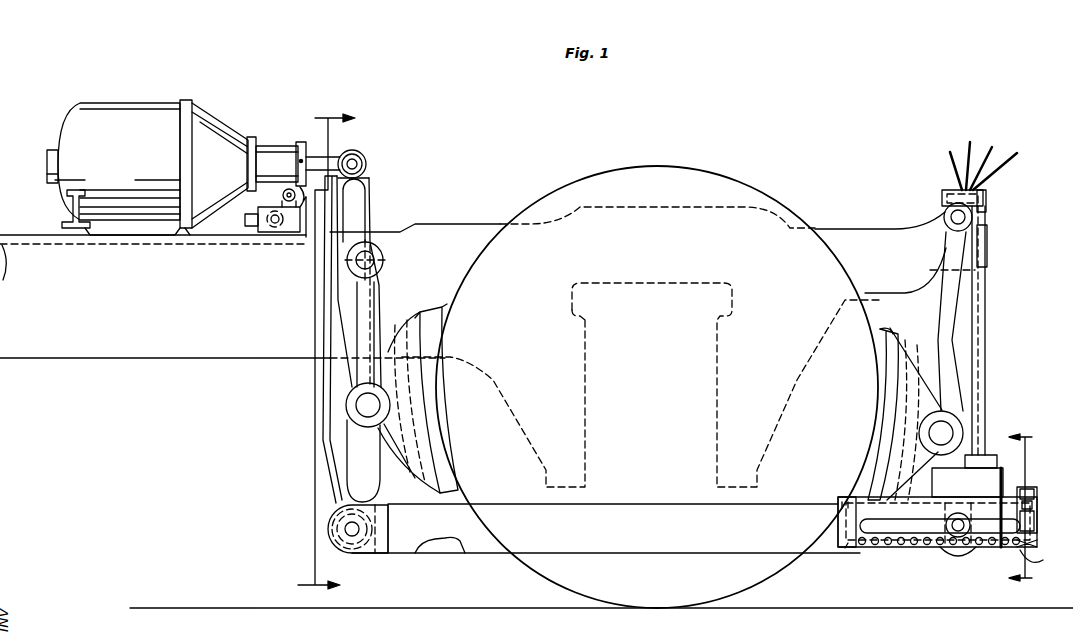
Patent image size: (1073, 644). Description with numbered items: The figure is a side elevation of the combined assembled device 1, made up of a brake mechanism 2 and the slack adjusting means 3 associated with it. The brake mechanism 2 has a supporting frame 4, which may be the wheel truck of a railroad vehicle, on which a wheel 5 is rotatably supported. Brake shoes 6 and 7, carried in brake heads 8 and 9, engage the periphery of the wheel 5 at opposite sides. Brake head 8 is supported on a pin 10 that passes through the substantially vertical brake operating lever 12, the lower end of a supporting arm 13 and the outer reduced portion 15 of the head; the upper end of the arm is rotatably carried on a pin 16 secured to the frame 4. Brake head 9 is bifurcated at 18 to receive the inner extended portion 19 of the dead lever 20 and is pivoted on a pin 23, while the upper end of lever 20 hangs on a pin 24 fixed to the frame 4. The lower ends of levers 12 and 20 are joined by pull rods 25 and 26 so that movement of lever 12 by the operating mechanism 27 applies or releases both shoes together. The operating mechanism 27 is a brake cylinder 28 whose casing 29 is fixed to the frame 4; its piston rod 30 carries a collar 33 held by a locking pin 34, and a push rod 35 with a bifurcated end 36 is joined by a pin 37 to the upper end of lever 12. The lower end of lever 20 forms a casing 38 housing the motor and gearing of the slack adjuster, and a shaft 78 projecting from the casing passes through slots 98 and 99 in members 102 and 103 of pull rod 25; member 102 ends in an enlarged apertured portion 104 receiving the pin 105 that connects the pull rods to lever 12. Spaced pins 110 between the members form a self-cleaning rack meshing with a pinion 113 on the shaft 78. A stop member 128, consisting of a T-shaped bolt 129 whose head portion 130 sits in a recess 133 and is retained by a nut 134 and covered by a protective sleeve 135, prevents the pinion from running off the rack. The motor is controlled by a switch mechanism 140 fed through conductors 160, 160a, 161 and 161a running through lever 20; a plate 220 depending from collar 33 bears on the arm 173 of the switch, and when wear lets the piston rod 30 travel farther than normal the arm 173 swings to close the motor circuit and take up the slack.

The combined assembled device 1 is at (541, 128).
The brake mechanism 2 is at (283, 385).
The slack adjusting means 3 is at (946, 577).
The supporting frame 4 is at (442, 224).
The wheel 5 is at (722, 190).
The brake shoe 6 is at (437, 463).
The brake shoe 7 is at (878, 444).
The brake head 8 is at (402, 465).
The brake head 9 is at (918, 348).
The pin 10 is at (356, 410).
The brake operating lever 12 is at (337, 448).
The supporting arm 13 is at (366, 320).
The outer reduced portion 15 is at (362, 430).
The pin 16 is at (382, 260).
The bifurcations 18 is at (938, 410).
The inner extended portion 19 is at (923, 367).
The dead lever 20 is at (981, 386).
The pin 23 is at (948, 433).
The pin 24 is at (952, 216).
The pull rod 25 is at (598, 536).
The pull rod 26 is at (450, 546).
The operating mechanism 27 is at (252, 91).
The brake cylinder 28 is at (120, 104).
The casing 29 is at (186, 228).
The piston rod 30 is at (268, 146).
The collar 33 is at (300, 143).
The locking pin 34 is at (300, 162).
The push rod 35 is at (345, 152).
The bifurcated end 36 is at (366, 164).
The pin 37 is at (368, 178).
The casing 38 is at (1000, 471).
The shaft 78 is at (962, 515).
The elongated slot 98 is at (915, 548).
The elongated slot 99 is at (845, 549).
The member 102 is at (912, 507).
The member 103 is at (845, 523).
The enlarged apertured portion 104 is at (370, 554).
The pin 105 is at (350, 530).
The pins 110 is at (883, 549).
The pinion 113 is at (962, 551).
The stop member 128 is at (1017, 501).
The bolt 129 is at (1037, 496).
The head portion 130 is at (1026, 561).
The recess 133 is at (1034, 543).
The nut 134 is at (1030, 489).
The protective sleeve 135 is at (1037, 513).
The switch mechanism 140 is at (258, 231).
The conductor 160 is at (948, 153).
The conductor 160a is at (966, 149).
The conductor 161 is at (995, 149).
The conductor 161a is at (1015, 159).
The arm 173 is at (283, 197).
The plate 220 is at (298, 234).